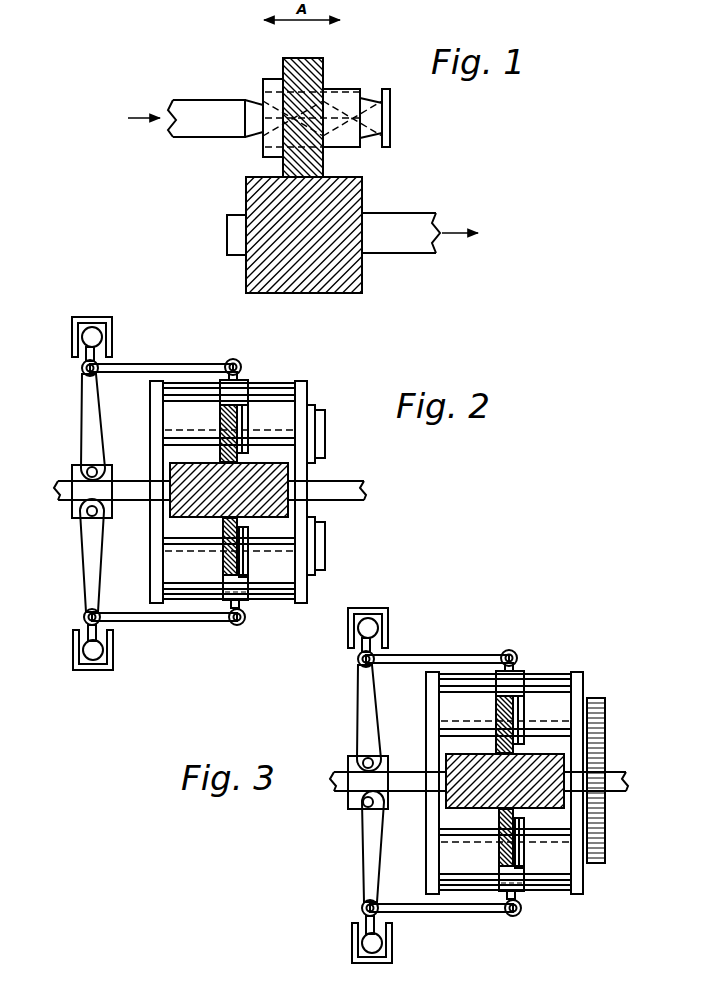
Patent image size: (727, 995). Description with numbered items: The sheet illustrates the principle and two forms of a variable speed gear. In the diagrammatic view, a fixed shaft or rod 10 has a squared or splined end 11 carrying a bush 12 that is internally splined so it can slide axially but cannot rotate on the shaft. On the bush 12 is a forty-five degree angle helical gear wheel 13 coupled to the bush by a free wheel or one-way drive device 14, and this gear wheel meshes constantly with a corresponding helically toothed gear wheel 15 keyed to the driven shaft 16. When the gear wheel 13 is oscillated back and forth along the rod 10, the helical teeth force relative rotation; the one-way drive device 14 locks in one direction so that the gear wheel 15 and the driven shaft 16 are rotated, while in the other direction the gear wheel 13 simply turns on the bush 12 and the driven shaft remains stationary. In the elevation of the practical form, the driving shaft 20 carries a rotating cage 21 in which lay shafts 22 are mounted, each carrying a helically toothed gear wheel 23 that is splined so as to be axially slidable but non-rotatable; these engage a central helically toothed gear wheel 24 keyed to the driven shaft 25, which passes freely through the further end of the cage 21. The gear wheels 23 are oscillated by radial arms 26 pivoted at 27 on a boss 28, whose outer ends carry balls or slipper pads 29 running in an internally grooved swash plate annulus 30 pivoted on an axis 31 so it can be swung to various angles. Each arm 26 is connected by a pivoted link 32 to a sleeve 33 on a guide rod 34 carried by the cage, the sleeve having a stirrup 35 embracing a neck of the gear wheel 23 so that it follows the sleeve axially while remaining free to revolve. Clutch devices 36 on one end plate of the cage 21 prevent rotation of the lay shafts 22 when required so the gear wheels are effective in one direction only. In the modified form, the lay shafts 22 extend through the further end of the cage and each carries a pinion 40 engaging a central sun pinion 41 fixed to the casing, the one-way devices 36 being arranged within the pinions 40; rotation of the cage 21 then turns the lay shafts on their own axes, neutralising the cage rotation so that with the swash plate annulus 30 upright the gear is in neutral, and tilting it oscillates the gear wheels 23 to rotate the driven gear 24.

In FIG. 1, the fixed shaft or rod 10 is at (181, 99).
In FIG. 1, the squared or splined end 11 is at (262, 104).
In FIG. 1, the bush 12 is at (360, 90).
In FIG. 1, the helical gear wheel 13 is at (323, 60).
In FIG. 1, the free wheel or one-way drive device 14 is at (272, 80).
In FIG. 1, the helically toothed gear wheel 15 is at (364, 187).
In FIG. 1, the driven shaft 16 is at (440, 213).
In FIG. 2, the driving shaft 20 is at (136, 501).
In FIG. 3, the driving shaft 20 is at (388, 798).
In FIG. 2, the rotating cage 21 is at (152, 407).
In FIG. 3, the rotating cage 21 is at (414, 783).
In FIG. 2, the lay shafts 22 is at (176, 440).
In FIG. 3, the lay shafts 22 is at (483, 782).
In FIG. 2, the helically toothed gear wheel 23 is at (220, 420).
In FIG. 3, the helically toothed gear wheel 23 is at (486, 782).
In FIG. 2, the central helically toothed gear wheel 24 is at (290, 480).
In FIG. 3, the central helically toothed gear wheel 24 is at (479, 777).
In FIG. 2, the driven shaft 25 is at (356, 501).
In FIG. 3, the driven shaft 25 is at (605, 793).
In FIG. 2, the radial arms 26 is at (82, 407).
In FIG. 3, the radial arms 26 is at (352, 783).
In FIG. 2, the pivot 27 is at (92, 467).
In FIG. 3, the pivot 27 is at (346, 749).
In FIG. 2, the boss 28 is at (72, 473).
In FIG. 3, the boss 28 is at (349, 782).
In FIG. 2, the balls or slipper pads 29 is at (103, 336).
In FIG. 3, the balls or slipper pads 29 is at (389, 779).
In FIG. 2, the swash plate annulus 30 is at (102, 317).
In FIG. 3, the swash plate annulus 30 is at (361, 771).
In FIG. 2, the axis 31 is at (88, 512).
In FIG. 3, the axis 31 is at (342, 809).
In FIG. 2, the pivoted link 32 is at (190, 364).
In FIG. 3, the pivoted link 32 is at (435, 783).
In FIG. 2, the sleeve 33 is at (235, 358).
In FIG. 3, the sleeve 33 is at (518, 771).
In FIG. 2, the guide rod 34 is at (286, 388).
In FIG. 3, the guide rod 34 is at (562, 785).
In FIG. 2, the stirrup 35 is at (244, 415).
In FIG. 3, the stirrup 35 is at (535, 782).
In FIG. 2, the clutch devices 36 is at (326, 420).
In FIG. 3, the pinion 40 is at (612, 780).
In FIG. 3, the sun pinion 41 is at (613, 780).